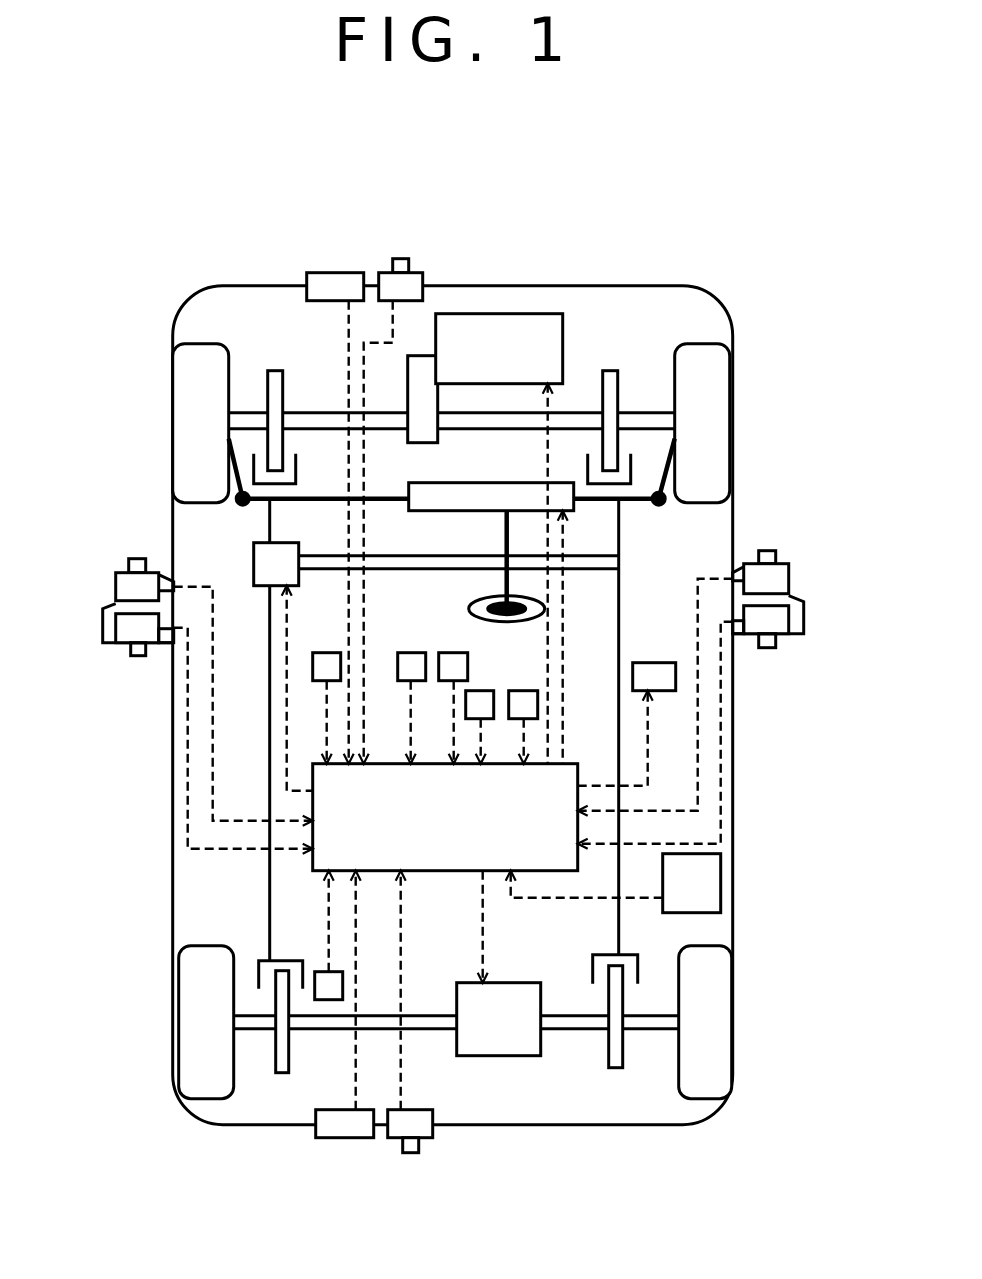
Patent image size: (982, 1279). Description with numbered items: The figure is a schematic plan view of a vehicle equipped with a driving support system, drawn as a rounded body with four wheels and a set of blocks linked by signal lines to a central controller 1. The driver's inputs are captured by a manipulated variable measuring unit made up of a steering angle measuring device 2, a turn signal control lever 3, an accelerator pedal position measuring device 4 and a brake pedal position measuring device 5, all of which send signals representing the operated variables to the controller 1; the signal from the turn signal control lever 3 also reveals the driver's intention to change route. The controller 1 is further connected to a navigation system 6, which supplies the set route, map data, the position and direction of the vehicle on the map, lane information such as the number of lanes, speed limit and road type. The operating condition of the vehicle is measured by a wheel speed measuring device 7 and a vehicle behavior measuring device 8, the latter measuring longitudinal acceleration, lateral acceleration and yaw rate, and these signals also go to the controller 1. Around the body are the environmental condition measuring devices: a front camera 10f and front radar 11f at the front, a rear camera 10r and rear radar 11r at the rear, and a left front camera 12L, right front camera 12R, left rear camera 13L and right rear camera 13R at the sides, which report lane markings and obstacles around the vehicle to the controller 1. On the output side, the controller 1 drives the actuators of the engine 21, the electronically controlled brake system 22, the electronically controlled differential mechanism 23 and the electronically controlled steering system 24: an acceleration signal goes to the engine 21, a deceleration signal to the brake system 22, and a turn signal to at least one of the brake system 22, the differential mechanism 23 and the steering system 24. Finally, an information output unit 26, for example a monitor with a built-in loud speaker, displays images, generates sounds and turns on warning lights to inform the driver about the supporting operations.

The controller 1 is at (443, 874).
The steering angle measuring device 2 is at (525, 688).
The turn signal control lever 3 is at (480, 688).
The accelerator pedal position measuring device 4 is at (450, 650).
The brake pedal position measuring device 5 is at (403, 650).
The navigation system 6 is at (720, 883).
The wheel speed measuring device 7 is at (320, 968).
The vehicle behavior measuring device 8 is at (325, 650).
The front camera 10f is at (414, 270).
The rear camera 10r is at (455, 1138).
The front radar 11f is at (334, 270).
The rear radar 11r is at (345, 1139).
The left front camera 12L is at (132, 556).
The right front camera 12R is at (770, 548).
The left rear camera 13L is at (135, 657).
The right rear camera 13R is at (772, 648).
The engine 21 is at (563, 340).
The electronically controlled brake system 22 is at (253, 560).
The electronically controlled differential mechanism 23 is at (505, 1057).
The electronically controlled steering system 24 is at (448, 482).
The information output unit 26 is at (657, 660).